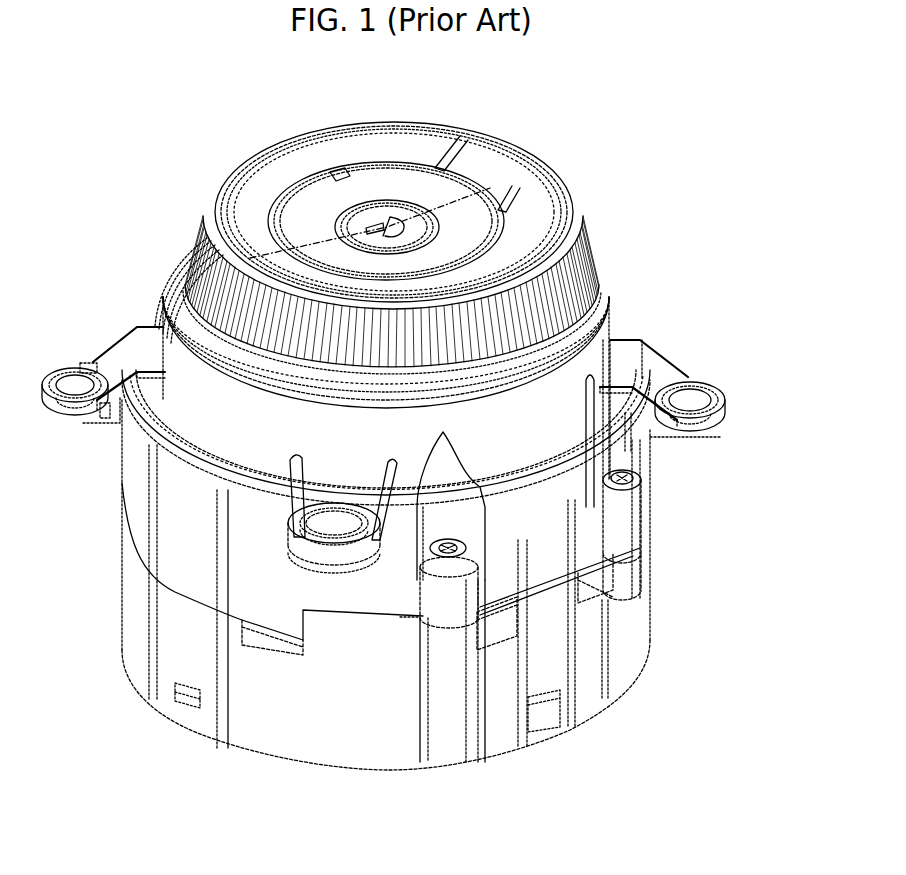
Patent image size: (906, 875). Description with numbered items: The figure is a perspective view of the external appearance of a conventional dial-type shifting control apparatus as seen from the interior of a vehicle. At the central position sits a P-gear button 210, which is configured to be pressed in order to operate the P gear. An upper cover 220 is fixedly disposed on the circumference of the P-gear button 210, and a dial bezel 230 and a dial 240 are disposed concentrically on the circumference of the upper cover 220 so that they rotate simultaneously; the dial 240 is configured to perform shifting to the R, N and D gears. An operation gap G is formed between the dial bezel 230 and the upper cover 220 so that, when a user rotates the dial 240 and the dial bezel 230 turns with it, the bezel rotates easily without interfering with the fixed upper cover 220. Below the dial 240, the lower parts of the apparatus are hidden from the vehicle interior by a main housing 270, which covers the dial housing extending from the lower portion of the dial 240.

The P-gear button 210 is at (407, 213).
The upper cover 220 is at (465, 217).
The dial bezel 230 is at (522, 233).
The dial 240 is at (563, 272).
The main housing 270 is at (648, 540).
The operation gap G is at (337, 175).